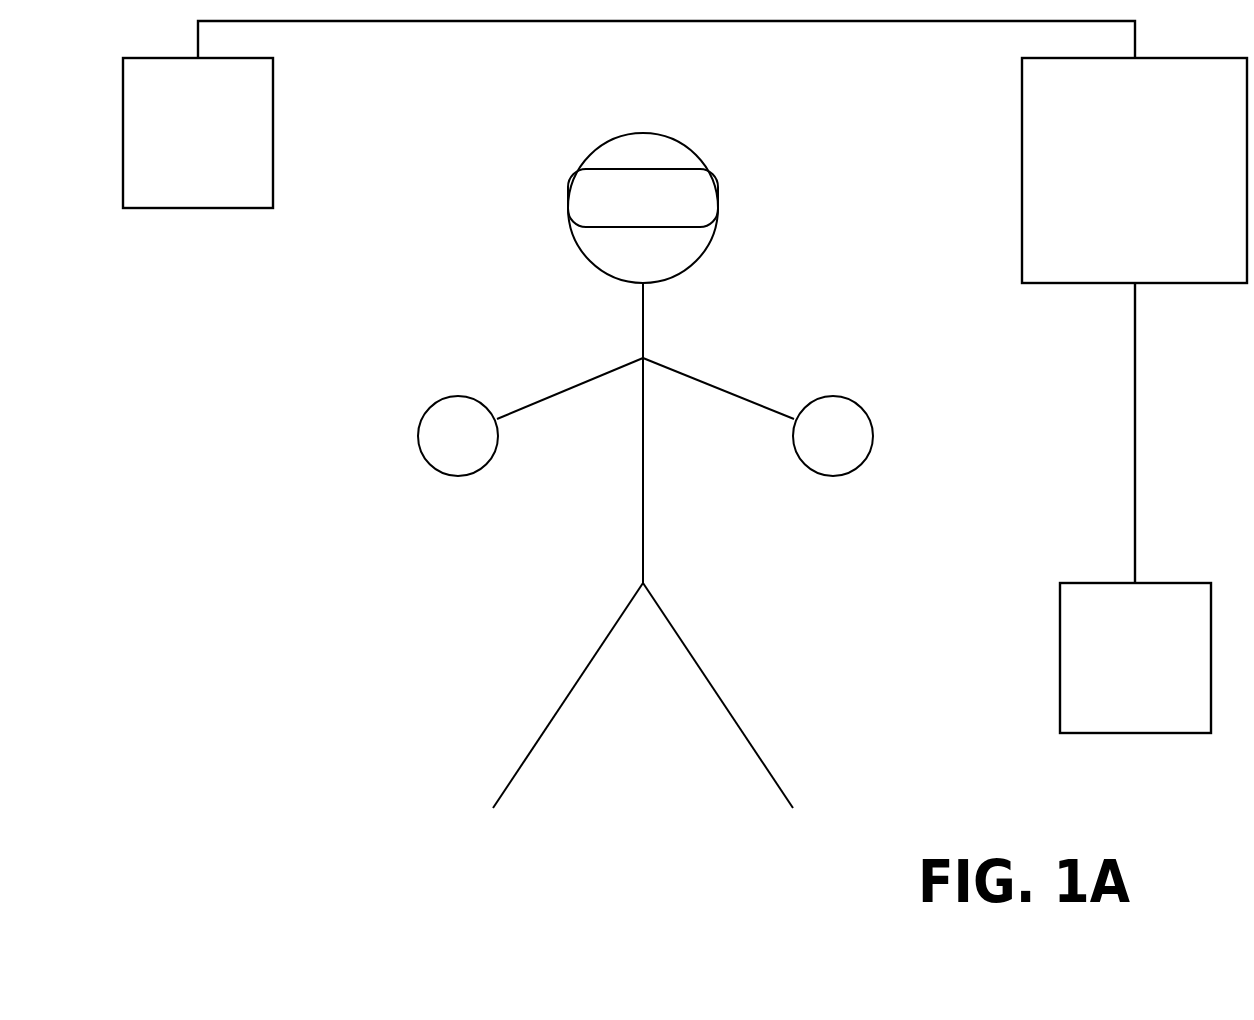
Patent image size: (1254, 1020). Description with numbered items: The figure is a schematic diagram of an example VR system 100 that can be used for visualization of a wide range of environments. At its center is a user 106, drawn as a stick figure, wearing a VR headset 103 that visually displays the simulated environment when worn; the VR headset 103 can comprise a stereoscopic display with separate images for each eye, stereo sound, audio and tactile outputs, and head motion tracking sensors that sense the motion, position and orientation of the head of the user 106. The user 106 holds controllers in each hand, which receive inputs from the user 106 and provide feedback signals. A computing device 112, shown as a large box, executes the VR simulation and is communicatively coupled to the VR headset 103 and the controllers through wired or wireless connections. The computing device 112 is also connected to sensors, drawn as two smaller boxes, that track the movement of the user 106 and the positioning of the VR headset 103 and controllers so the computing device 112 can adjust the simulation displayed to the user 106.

The VR system 100 is at (338, 592).
The VR headset 103 is at (622, 210).
The user 106 is at (616, 475).
The computing device 112 is at (1114, 181).